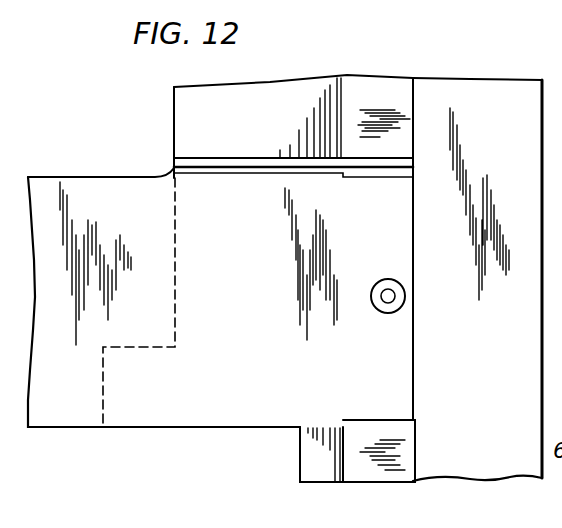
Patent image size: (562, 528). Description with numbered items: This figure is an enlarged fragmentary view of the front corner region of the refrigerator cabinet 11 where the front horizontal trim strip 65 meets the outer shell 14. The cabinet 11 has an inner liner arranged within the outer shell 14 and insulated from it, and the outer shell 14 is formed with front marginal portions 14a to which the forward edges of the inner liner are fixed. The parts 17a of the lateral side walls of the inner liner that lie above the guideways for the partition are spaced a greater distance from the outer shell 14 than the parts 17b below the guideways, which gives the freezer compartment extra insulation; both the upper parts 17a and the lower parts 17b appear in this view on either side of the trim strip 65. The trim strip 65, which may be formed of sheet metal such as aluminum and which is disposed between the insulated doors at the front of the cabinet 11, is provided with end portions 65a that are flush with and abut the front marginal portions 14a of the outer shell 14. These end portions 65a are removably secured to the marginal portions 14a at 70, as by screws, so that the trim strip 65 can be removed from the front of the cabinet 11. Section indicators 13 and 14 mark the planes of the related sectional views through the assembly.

The cabinet 11 is at (286, 95).
The section line 13- 13 is at (54, 125).
The outer shell 14 is at (57, 298).
The front marginal portions 14a is at (466, 466).
The parts of the lateral side walls above the guideways 17a is at (174, 118).
The parts of the lateral side walls below the guideways 17b is at (302, 465).
The front horizontal trim strip 65 is at (201, 430).
The end portions 65a is at (382, 405).
The securing point 70 is at (381, 311).